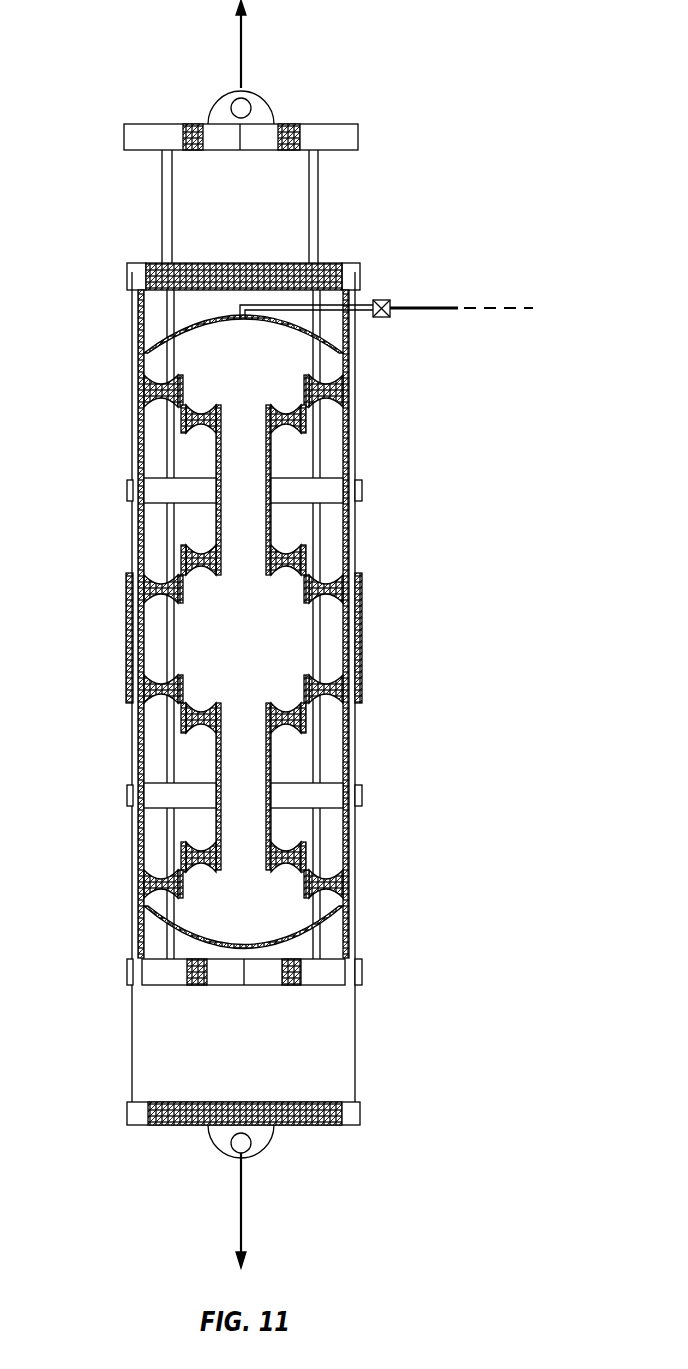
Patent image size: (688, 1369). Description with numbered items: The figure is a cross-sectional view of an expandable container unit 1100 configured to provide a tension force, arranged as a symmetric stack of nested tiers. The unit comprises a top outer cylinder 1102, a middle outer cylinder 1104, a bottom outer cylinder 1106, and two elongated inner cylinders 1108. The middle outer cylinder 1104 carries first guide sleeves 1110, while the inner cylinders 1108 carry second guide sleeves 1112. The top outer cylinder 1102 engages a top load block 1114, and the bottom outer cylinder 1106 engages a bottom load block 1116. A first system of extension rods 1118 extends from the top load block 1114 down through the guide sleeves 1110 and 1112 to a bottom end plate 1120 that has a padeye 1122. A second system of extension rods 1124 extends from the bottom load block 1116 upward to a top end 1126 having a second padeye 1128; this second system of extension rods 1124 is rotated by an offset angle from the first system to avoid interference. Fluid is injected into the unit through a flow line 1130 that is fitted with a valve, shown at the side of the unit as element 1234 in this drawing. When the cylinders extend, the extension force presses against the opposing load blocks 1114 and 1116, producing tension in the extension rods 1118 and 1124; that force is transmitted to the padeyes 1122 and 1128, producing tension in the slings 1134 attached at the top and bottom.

The expandable container unit 1100 is at (293, 634).
The top outer cylinder 1102 is at (201, 624).
The middle outer cylinder 1104 is at (198, 637).
The bottom outer cylinder 1106 is at (198, 909).
The inner cylinders 1108 is at (179, 638).
The first guide sleeves 1110 is at (207, 638).
The second guide sleeves 1112 is at (207, 630).
The top load block 1114 is at (215, 258).
The bottom load block 1116 is at (207, 993).
The first system of extension rods 1118 is at (204, 628).
The bottom end plate 1120 is at (216, 1134).
The padeye 1122 is at (275, 1157).
The second system of extension rods 1124 is at (204, 1052).
The top end 1126 is at (278, 129).
The second padeye 1128 is at (272, 89).
The flow line 1130 is at (338, 339).
The slings 1134 is at (212, 634).
The valve 1234 is at (453, 292).